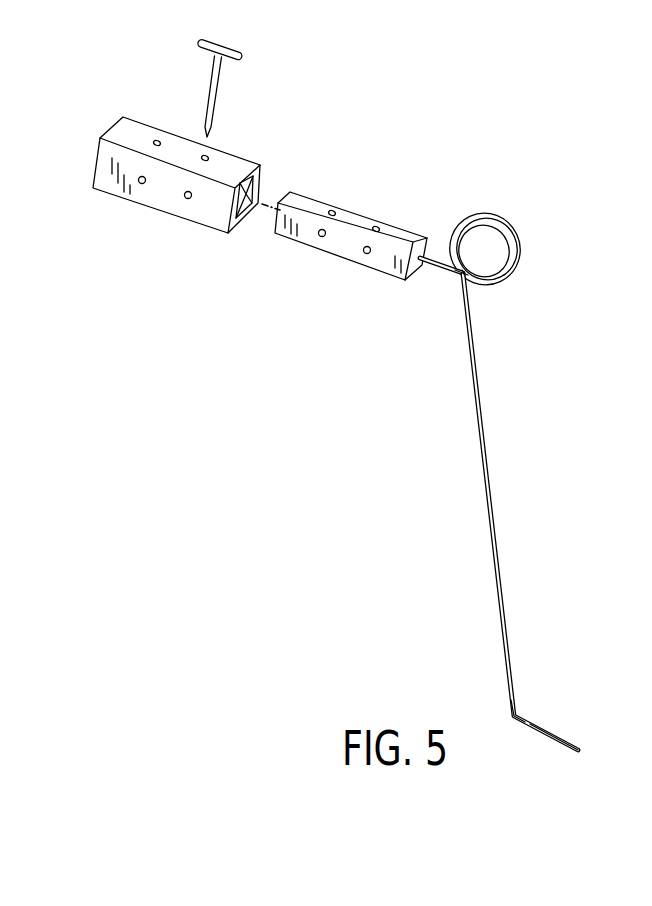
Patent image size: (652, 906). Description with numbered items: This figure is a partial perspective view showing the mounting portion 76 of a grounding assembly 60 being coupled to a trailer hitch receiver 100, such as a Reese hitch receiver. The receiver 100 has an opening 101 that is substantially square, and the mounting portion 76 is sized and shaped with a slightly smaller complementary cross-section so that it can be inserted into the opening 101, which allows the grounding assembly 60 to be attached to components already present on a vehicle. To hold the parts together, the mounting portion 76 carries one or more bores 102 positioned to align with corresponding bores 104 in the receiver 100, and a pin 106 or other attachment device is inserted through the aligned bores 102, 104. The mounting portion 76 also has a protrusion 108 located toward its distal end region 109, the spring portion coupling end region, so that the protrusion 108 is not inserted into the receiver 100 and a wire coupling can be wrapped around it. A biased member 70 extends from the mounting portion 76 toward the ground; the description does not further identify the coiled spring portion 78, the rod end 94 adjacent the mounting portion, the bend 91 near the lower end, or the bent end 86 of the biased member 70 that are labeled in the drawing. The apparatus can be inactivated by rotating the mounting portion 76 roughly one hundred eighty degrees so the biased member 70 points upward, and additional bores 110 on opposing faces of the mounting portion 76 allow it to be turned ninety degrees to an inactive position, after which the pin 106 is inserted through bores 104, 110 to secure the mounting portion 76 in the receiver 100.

The grounding assembly 60 is at (548, 436).
The biased member 70 is at (494, 497).
The mounting portion 76 is at (395, 233).
The coil spring 78 is at (520, 224).
The bent end of rod 86 is at (543, 739).
The bend 91 is at (515, 673).
The rod end 94 is at (460, 273).
The trailer hitch receiver 100 is at (123, 128).
The opening 101 is at (243, 215).
The bores 102 is at (334, 210).
The bores 104 is at (207, 157).
The pin 106 is at (223, 44).
The protrusion 108 is at (366, 253).
The distal end region 109 is at (428, 250).
The bores 110 is at (321, 236).